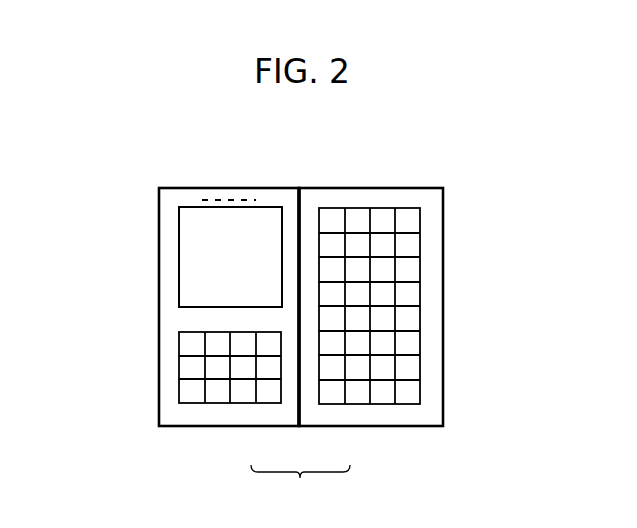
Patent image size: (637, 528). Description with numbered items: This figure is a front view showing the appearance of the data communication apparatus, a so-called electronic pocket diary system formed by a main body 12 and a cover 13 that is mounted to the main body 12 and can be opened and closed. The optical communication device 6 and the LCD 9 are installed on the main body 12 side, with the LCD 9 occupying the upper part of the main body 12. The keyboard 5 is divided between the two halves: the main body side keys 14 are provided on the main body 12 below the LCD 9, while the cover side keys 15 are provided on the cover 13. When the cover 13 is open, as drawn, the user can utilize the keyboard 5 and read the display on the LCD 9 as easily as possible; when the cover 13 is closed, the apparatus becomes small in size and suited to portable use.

The keyboard 5 is at (300, 485).
The optical communication device 6 is at (230, 192).
The LCD 9 is at (190, 263).
The main body 12 is at (283, 193).
The cover 13 is at (411, 196).
The main body side keys 14 is at (240, 398).
The cover side keys 15 is at (358, 398).